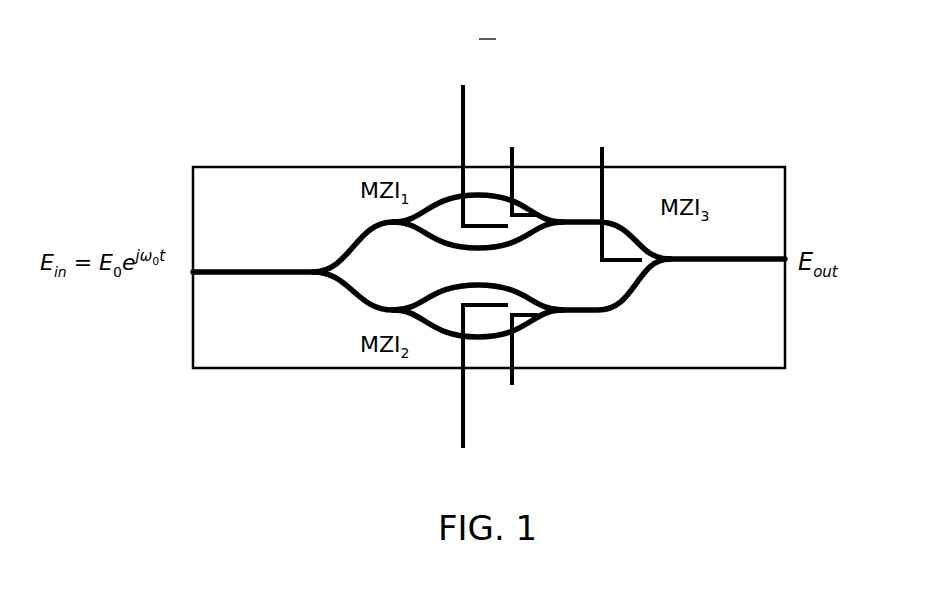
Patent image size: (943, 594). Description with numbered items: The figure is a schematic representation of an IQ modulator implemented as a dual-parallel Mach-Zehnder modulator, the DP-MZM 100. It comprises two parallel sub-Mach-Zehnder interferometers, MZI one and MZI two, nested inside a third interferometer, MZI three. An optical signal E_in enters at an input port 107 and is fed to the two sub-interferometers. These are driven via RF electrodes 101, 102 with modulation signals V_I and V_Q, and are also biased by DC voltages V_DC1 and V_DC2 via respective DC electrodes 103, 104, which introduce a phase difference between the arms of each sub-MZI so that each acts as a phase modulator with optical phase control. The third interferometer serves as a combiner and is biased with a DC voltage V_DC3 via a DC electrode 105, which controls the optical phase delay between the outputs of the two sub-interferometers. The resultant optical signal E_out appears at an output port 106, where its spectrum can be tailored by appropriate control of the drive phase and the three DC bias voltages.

The DP-MZM 100 is at (258, 167).
The RF electrode 101 is at (462, 392).
The RF electrode 102 is at (463, 133).
The DC electrode 103 is at (515, 193).
The DC electrode 104 is at (513, 350).
The DC electrode 105 is at (603, 193).
The output port 106 is at (773, 255).
The input port 107 is at (228, 270).